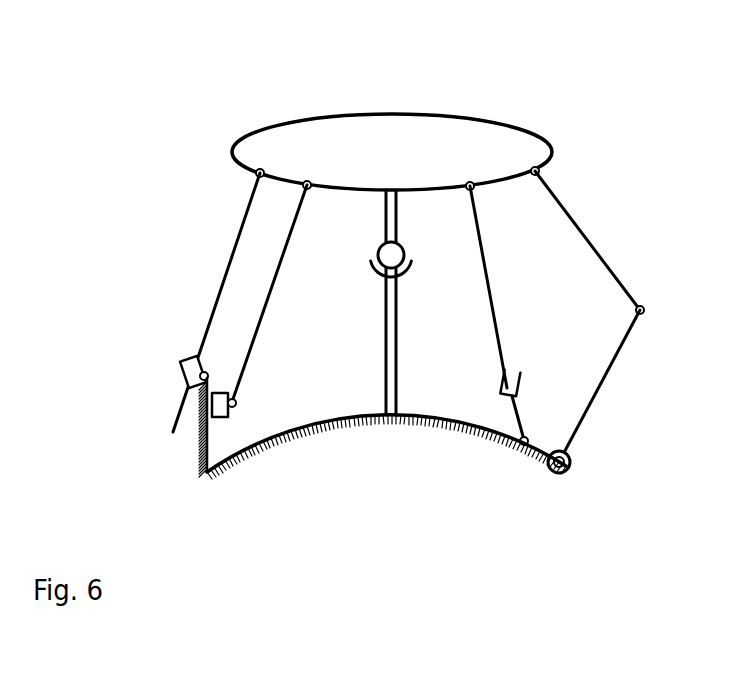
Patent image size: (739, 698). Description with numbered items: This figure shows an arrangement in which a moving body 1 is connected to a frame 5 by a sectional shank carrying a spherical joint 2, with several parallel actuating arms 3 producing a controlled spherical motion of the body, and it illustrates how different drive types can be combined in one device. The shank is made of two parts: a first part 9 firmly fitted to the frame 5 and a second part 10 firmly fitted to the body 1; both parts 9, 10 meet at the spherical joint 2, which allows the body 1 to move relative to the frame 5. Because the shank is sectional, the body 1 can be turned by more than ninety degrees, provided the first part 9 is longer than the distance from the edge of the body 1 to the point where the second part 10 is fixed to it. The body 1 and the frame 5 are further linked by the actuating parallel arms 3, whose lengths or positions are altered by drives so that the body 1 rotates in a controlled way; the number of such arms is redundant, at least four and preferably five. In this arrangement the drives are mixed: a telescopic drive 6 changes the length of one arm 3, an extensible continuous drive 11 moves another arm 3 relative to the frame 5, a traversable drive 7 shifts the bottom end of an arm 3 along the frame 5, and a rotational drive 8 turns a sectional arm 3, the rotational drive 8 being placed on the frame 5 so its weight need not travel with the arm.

The body 1 is at (395, 127).
The spherical joint 2 is at (404, 255).
The actuating parallel arms 3 is at (573, 217).
The frame 5 is at (300, 436).
The telescopic drive 6 is at (522, 380).
The traversable drive 7 is at (222, 408).
The rotational drive 8 is at (570, 457).
The first part of the shank 9 is at (397, 396).
The second part of the shank 10 is at (383, 227).
The extensible continuous drive 11 is at (185, 362).